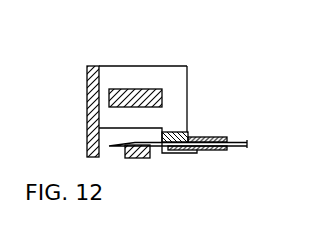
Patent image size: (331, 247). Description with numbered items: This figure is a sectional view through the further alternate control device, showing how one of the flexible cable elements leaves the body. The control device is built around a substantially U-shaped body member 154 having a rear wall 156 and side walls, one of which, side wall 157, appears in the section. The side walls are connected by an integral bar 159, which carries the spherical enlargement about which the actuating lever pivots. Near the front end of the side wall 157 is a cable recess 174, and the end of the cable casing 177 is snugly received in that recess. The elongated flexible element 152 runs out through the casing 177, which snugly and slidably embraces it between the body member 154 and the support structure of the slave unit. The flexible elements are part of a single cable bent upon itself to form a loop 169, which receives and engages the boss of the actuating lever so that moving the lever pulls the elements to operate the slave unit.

The elongated flexible element 152 is at (236, 145).
The U-shaped body member 154 is at (125, 65).
The rear wall 156 is at (87, 84).
The side wall 157 is at (176, 77).
The integral bar 159 is at (140, 98).
The loop 169 is at (114, 149).
The cable recess 174 is at (193, 138).
The cable casing 177 is at (214, 137).